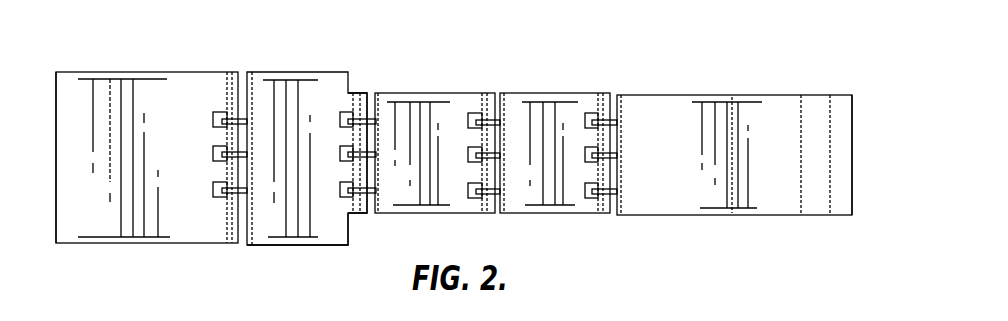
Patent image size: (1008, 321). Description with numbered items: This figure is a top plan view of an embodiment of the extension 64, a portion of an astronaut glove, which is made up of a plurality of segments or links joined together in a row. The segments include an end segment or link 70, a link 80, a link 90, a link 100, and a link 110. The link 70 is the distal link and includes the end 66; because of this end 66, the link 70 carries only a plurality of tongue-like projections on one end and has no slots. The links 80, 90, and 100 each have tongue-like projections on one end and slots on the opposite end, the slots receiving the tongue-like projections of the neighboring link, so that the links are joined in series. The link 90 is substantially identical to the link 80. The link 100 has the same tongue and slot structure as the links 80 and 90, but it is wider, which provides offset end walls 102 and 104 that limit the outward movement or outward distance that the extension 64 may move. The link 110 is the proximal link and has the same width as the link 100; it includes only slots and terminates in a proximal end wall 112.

The extension 64 is at (661, 66).
The end 66 is at (853, 158).
The end segment or link 70 is at (758, 95).
The link 80 is at (517, 92).
The link 90 is at (445, 92).
The link 100 is at (277, 72).
The offset end wall 102 is at (350, 87).
The offset end wall 104 is at (350, 228).
The link 110 is at (153, 70).
The proximal end wall 112 is at (52, 203).